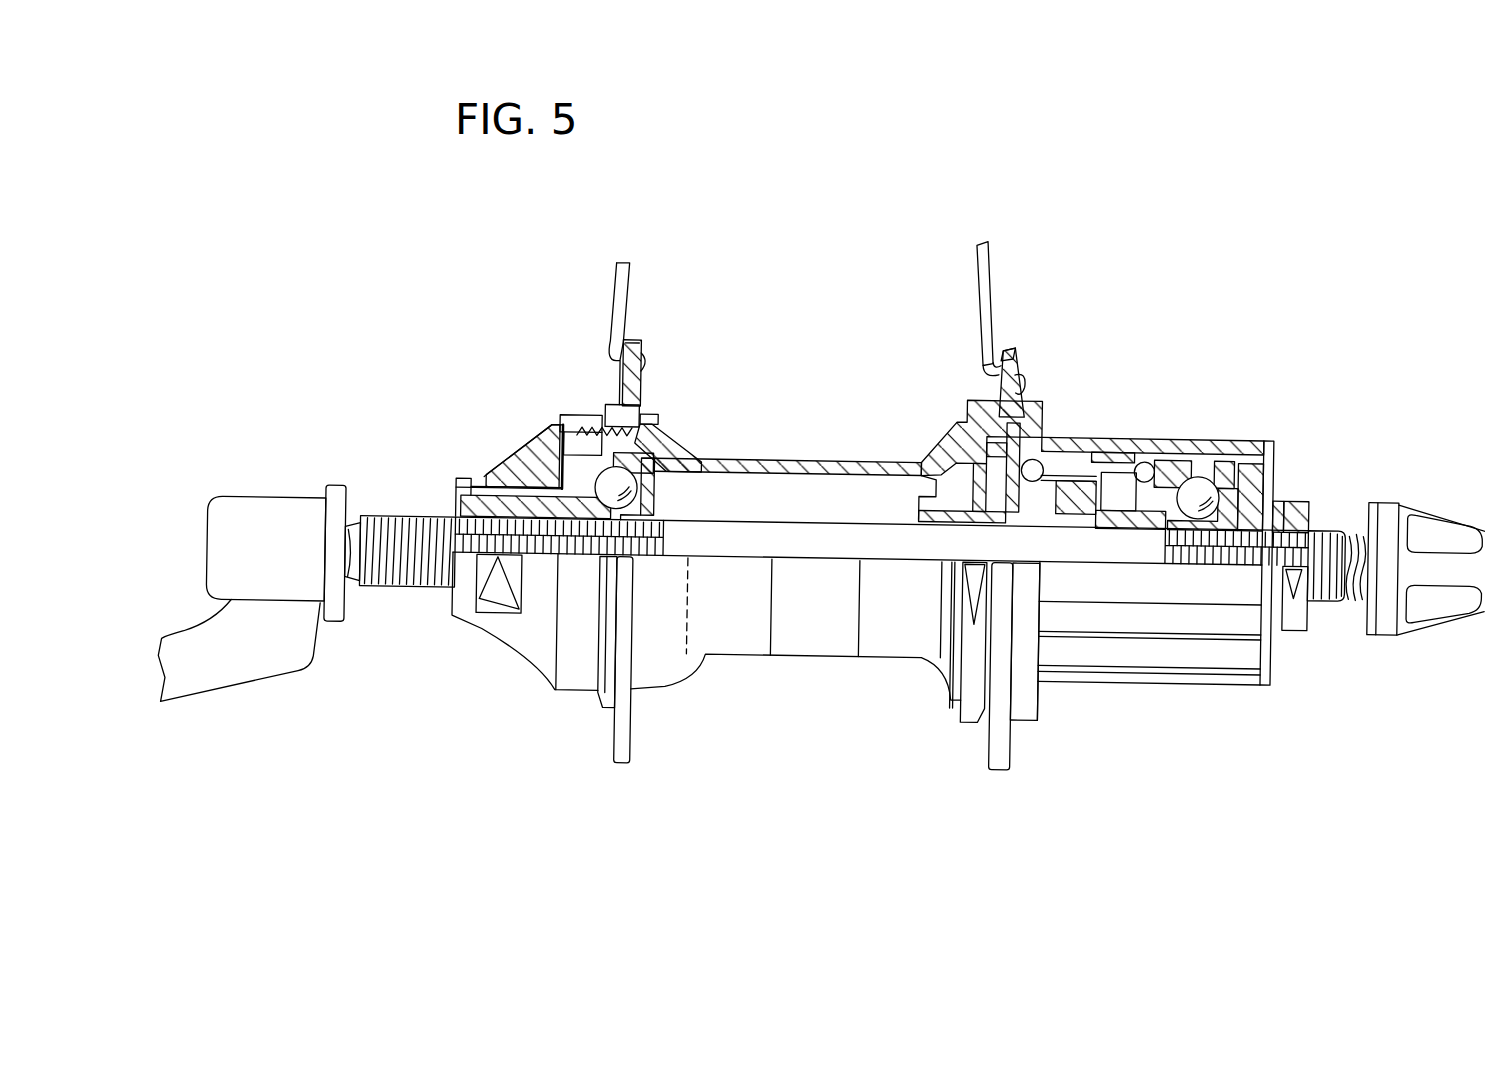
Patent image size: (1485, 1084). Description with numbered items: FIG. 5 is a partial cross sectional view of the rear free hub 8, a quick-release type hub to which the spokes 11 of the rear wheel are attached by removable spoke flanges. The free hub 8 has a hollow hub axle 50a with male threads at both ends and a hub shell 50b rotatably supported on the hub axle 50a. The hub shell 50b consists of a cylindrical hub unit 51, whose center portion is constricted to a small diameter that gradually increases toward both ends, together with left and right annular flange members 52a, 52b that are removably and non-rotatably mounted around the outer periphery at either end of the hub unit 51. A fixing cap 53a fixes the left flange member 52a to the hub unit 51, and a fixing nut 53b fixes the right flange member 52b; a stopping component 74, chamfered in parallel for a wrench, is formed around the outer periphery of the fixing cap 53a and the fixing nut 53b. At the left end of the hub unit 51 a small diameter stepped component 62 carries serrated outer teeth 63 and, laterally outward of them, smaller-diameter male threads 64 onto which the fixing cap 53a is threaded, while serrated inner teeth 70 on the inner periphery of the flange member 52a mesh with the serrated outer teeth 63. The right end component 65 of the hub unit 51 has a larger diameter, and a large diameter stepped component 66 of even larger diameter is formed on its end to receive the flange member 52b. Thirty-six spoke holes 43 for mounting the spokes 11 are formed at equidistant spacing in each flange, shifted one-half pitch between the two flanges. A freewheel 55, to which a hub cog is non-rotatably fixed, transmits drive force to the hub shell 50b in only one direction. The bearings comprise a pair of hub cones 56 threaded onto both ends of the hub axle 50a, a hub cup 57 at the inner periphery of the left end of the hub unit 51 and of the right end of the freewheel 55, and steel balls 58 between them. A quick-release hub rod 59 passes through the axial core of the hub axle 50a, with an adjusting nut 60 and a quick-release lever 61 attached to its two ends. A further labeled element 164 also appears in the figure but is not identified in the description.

The free hub 8 is at (838, 378).
The spokes 11 is at (627, 287).
The spoke holes 43 is at (633, 403).
The hub axle 50a is at (413, 517).
The hub shell 50b is at (797, 452).
The hub unit 51 is at (683, 430).
The left flange member 52a is at (642, 385).
The right flange member 52b is at (1030, 393).
The fixing cap 53a is at (557, 473).
The fixing nut 53b is at (963, 412).
The freewheel 55 is at (1167, 440).
The hub cones 56 is at (490, 487).
The hub cup 57 is at (597, 487).
The steel balls 58 is at (540, 470).
The quick-release hub rod 59 is at (1353, 545).
The adjusting nut 60 is at (1437, 530).
The quick-release lever 61 is at (280, 515).
The small diameter stepped component 62 is at (603, 380).
The serrated outer teeth 63 is at (640, 430).
The male threads 64 is at (550, 440).
The right end component 65 is at (967, 737).
The large diameter stepped component 66 is at (1005, 350).
The serrated inner teeth 70 is at (683, 422).
The stopping component 74 is at (493, 603).
The first hub flange 164 is at (647, 690).